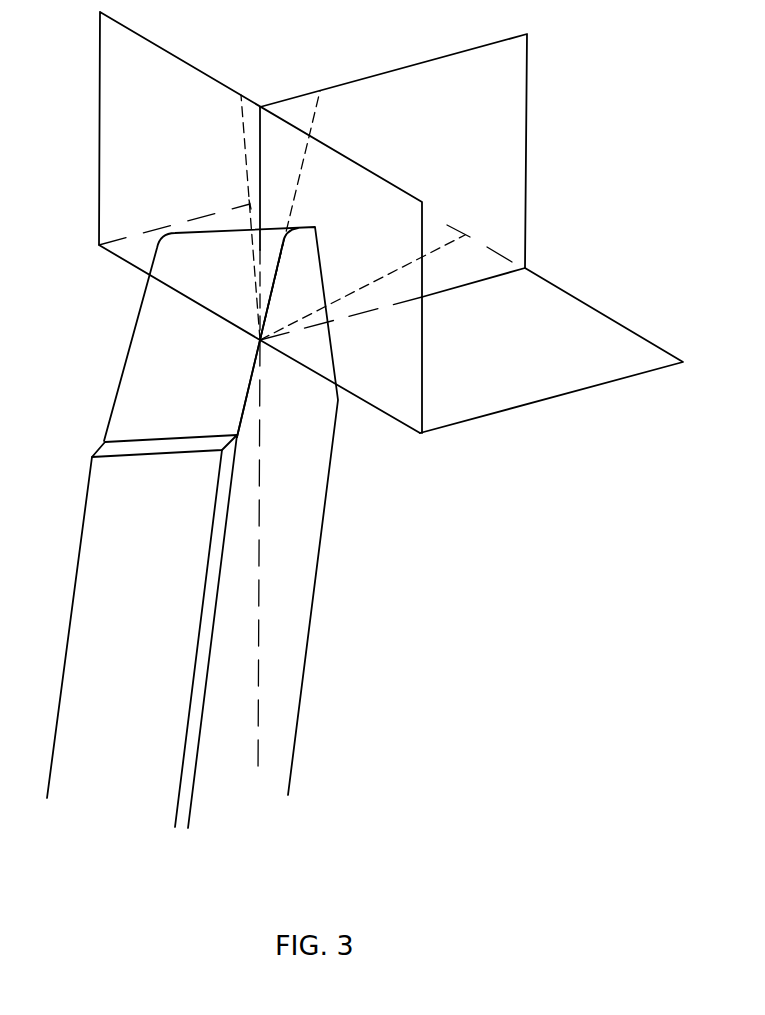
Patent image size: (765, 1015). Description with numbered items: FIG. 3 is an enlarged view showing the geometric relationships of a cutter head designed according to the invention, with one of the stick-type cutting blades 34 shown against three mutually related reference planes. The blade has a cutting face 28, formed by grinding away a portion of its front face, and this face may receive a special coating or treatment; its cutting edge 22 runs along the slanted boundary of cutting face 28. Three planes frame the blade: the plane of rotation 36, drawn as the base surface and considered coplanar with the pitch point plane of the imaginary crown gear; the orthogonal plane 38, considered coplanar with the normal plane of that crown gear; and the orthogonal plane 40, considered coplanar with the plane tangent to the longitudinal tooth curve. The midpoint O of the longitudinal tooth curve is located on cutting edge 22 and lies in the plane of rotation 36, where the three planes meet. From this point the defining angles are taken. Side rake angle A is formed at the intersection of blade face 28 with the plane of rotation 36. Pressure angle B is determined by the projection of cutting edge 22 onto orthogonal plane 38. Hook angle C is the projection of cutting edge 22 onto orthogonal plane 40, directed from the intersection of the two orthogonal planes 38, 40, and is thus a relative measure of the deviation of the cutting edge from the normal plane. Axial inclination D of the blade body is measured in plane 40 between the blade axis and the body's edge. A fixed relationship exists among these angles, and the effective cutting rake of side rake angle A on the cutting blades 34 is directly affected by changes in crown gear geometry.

The orthogonal plane 40 is at (172, 132).
The orthogonal plane 38 is at (456, 98).
The plane of rotation 36 is at (504, 324).
The cutting face 28 is at (310, 477).
The cutting edge 22 is at (251, 377).
The cutting blades 34 is at (410, 562).
The midpoint O is at (260, 340).
The side rake angle A is at (486, 268).
The pressure angle B is at (262, 178).
The hook angle C is at (278, 140).
The axial inclination D is at (212, 663).